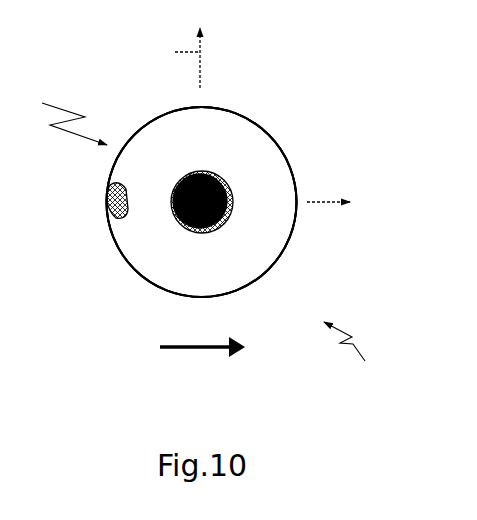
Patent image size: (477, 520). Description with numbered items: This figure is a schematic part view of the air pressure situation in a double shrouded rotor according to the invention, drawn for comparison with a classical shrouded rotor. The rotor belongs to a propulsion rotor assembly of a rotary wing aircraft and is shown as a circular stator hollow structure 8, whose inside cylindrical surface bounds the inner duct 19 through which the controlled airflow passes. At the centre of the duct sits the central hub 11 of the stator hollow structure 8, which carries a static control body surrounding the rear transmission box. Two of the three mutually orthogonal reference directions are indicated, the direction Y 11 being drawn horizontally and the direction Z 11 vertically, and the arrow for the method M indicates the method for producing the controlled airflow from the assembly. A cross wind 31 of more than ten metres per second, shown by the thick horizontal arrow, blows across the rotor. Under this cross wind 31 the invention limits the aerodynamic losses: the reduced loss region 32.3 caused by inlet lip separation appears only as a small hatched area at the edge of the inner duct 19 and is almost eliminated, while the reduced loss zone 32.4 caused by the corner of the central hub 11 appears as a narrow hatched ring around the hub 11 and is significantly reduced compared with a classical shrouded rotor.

The central hub 11 is at (213, 170).
The inner duct 19 is at (228, 188).
The stator hollow structure 8 is at (177, 230).
The reduced loss zone 32.4 is at (268, 239).
The reduced loss region 32.3 is at (101, 247).
The cross wind 31 is at (201, 381).
The direction Z is at (164, 58).
The direction Y is at (330, 162).
The method M is at (354, 347).